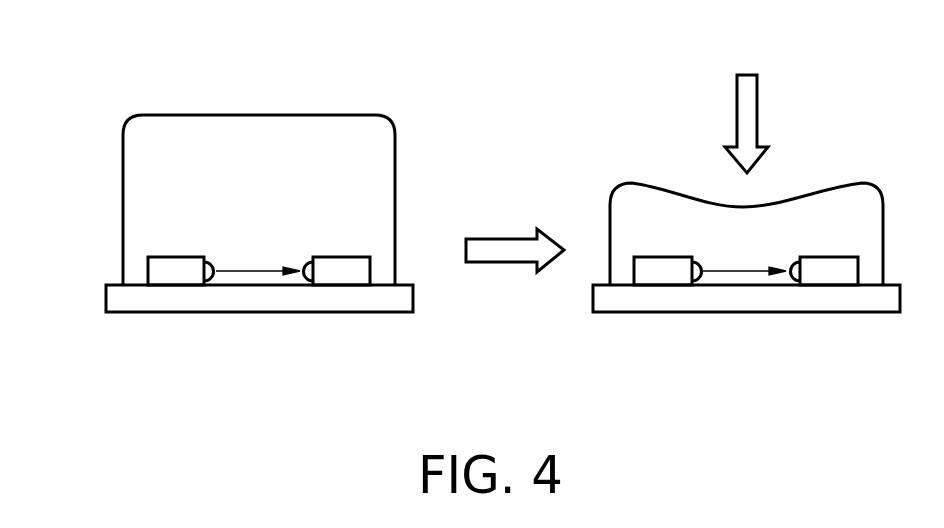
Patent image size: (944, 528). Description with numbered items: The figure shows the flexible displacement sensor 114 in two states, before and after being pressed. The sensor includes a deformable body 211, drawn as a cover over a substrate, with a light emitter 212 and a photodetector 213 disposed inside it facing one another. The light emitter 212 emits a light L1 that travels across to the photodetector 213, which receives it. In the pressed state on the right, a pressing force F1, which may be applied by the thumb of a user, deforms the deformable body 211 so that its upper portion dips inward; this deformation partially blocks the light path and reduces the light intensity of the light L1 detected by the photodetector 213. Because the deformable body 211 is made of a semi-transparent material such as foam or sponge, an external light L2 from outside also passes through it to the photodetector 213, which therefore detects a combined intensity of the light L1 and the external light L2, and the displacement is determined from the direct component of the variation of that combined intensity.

The flexible displacement sensor 114 is at (132, 73).
The deformable body 211 is at (297, 127).
The light emitter 212 is at (173, 280).
The photodetector 213 is at (342, 278).
The light L1 is at (252, 273).
The external light L2 is at (712, 228).
The pressing force F1 is at (746, 102).